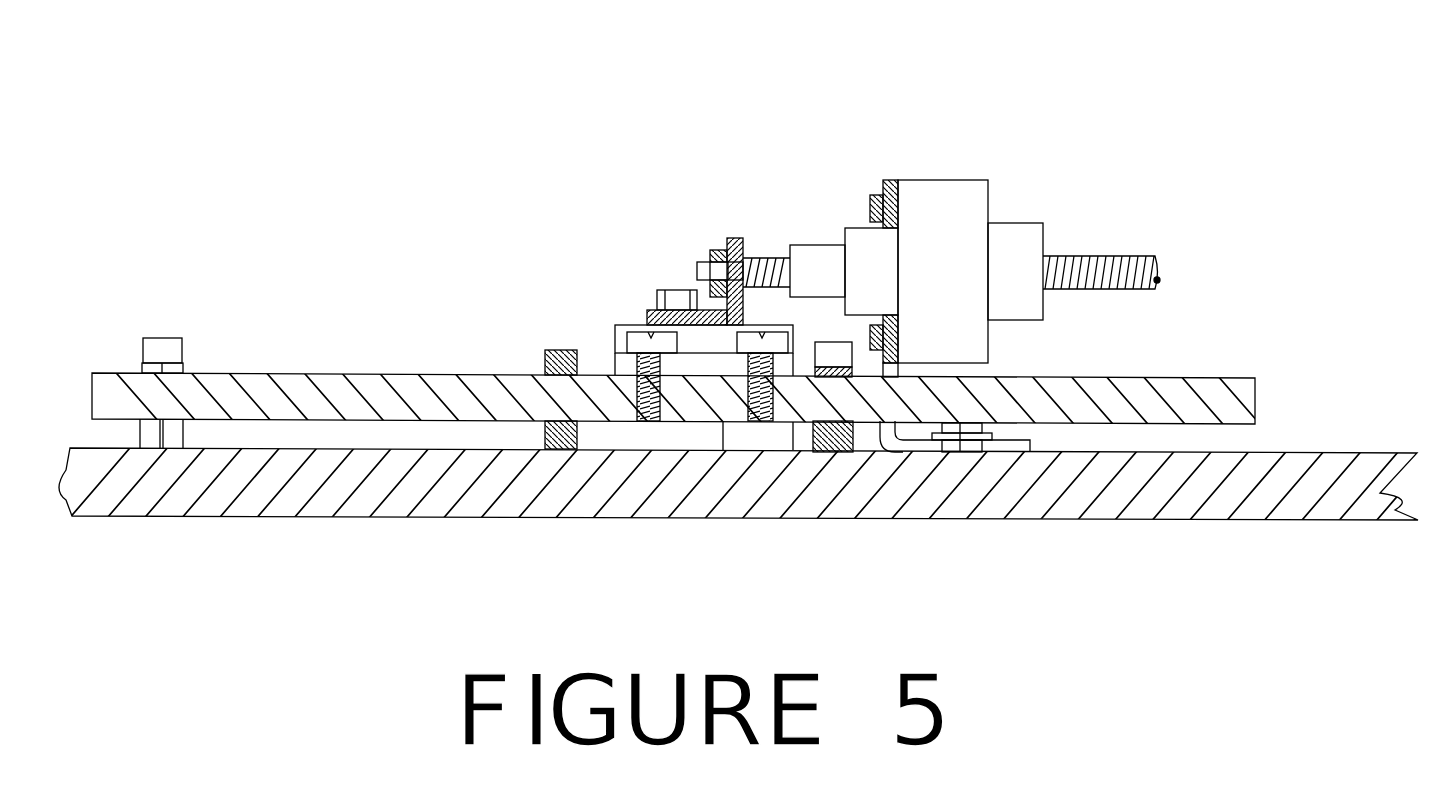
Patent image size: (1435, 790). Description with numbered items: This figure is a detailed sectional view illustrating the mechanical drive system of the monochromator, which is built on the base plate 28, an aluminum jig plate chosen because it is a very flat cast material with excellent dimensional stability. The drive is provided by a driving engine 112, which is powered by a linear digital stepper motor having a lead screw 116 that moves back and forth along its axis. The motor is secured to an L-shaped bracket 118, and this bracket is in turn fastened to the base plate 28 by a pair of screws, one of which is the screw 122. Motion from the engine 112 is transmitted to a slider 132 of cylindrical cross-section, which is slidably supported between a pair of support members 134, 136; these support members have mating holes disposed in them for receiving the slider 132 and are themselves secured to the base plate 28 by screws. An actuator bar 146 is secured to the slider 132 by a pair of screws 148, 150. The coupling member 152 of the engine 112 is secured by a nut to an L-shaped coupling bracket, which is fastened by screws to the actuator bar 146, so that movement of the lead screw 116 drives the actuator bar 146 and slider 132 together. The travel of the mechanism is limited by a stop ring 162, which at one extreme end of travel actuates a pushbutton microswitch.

The base plate 28 is at (1085, 522).
The driving engine 112 is at (1040, 167).
The lead screw 116 is at (1108, 257).
The L-shaped bracket 118 is at (890, 180).
The screw 122 is at (970, 428).
The slider 132 is at (1207, 378).
The support member 134 is at (183, 349).
The support member 136 is at (827, 452).
The actuator bar 146 is at (615, 342).
The screw 148 is at (640, 333).
The screw 150 is at (785, 325).
The coupling member 152 is at (741, 238).
The stop ring 162 is at (542, 367).